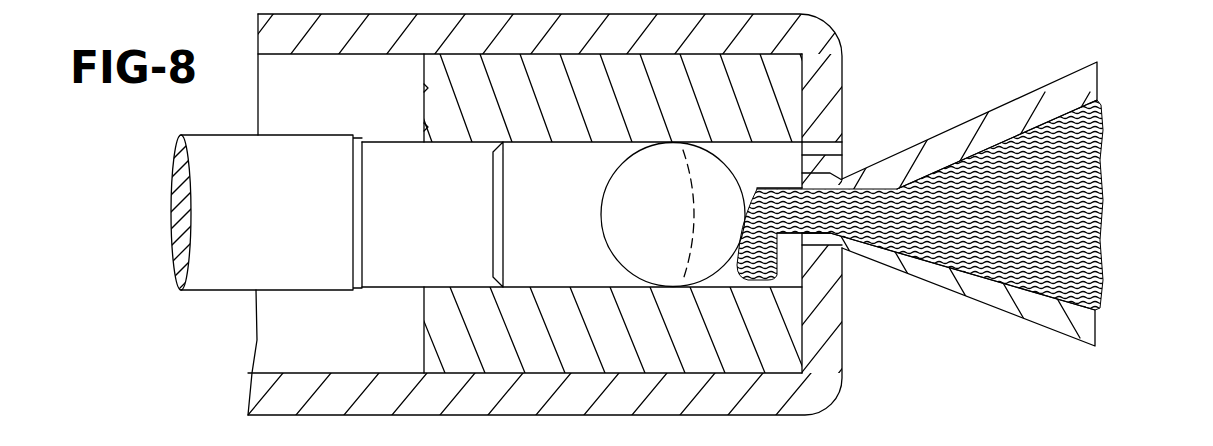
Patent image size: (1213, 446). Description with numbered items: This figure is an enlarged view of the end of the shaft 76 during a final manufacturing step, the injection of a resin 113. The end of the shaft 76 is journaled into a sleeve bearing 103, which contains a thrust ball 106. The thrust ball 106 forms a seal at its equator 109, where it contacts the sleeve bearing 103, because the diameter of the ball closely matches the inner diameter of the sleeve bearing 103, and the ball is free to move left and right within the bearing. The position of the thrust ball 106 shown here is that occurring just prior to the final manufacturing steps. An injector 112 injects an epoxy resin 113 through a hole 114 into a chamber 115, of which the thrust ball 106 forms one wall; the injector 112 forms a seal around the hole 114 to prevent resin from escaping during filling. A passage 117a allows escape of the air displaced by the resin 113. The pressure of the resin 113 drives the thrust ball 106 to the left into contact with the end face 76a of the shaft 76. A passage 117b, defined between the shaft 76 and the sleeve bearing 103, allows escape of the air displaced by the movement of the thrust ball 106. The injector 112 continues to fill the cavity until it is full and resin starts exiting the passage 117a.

The shaft 76 is at (256, 218).
The end face 76a is at (503, 222).
The sleeve bearing 103 is at (423, 338).
The thrust ball 106 is at (606, 190).
The equator 109 is at (680, 218).
The injector 112 is at (1008, 98).
The epoxy resin 113 is at (1102, 204).
The hole 114 is at (833, 243).
The chamber 115 is at (771, 166).
The passage 117a is at (848, 150).
The passage 117b is at (416, 127).